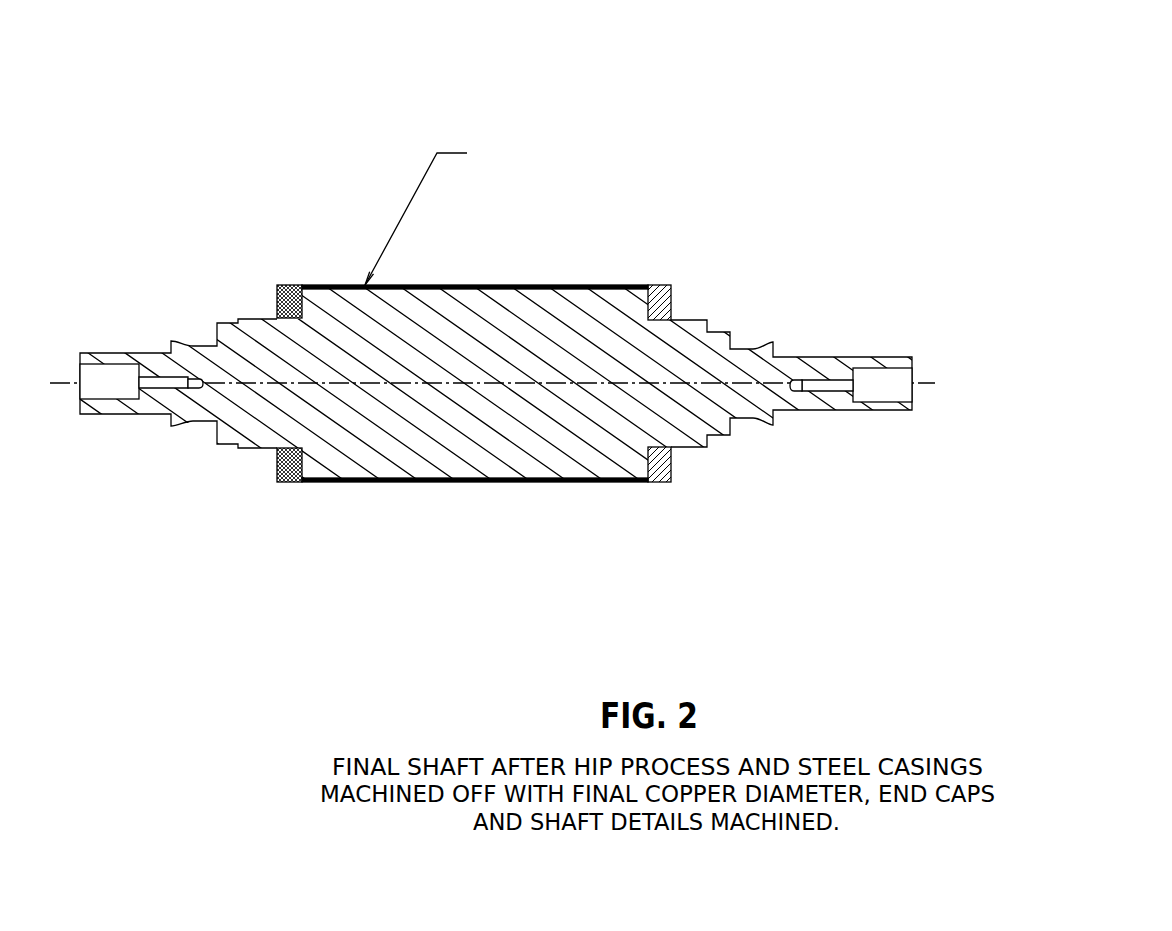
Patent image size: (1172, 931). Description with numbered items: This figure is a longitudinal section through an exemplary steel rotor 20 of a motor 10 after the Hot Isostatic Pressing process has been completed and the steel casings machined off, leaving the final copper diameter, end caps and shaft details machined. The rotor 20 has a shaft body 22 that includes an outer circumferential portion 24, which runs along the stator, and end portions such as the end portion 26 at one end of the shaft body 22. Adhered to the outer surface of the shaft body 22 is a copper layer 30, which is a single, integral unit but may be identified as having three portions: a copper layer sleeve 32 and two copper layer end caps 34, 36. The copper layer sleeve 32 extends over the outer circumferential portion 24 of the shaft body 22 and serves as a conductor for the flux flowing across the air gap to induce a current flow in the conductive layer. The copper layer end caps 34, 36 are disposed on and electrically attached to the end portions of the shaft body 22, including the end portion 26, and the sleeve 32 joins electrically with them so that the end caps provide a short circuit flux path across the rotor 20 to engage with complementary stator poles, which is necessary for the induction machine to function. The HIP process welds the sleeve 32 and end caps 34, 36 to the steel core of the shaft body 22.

The motor 10 is at (593, 525).
The rotor 20 is at (586, 344).
The shaft body 22 is at (586, 386).
The outer circumferential portion 24 is at (586, 474).
The end portion 26 is at (586, 447).
The copper layer 30 is at (715, 250).
The copper layer sleeve 32 is at (592, 344).
The copper layer end cap 34 is at (442, 261).
The copper layer end cap 36 is at (875, 369).